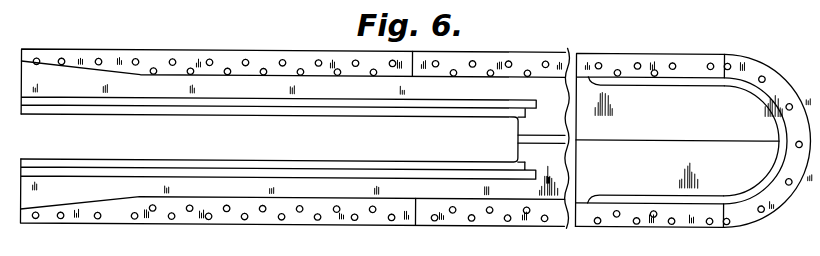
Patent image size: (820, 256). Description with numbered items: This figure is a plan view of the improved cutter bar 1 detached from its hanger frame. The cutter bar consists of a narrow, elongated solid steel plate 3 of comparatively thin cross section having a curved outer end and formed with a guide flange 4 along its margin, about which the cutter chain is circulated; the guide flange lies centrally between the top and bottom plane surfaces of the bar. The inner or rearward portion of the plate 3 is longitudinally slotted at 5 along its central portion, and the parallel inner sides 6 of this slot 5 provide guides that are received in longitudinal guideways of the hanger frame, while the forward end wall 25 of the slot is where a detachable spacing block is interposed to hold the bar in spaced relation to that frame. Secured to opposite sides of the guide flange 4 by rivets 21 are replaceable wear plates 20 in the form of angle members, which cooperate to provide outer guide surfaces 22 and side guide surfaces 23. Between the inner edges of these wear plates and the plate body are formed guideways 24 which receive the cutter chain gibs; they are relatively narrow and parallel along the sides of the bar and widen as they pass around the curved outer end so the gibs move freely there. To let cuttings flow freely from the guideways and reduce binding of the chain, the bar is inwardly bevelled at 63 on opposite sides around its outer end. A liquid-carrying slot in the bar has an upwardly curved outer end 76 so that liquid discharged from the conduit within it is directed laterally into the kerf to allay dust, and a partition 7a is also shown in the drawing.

The cutter bar 1 is at (338, 195).
The solid steel plate 3 is at (632, 102).
The guide flange 4 is at (764, 220).
The slot 5 is at (258, 110).
The inner sides of slot 6 is at (210, 113).
The partition 7a is at (670, 137).
The wear plates 20 is at (465, 58).
The rivets 21 is at (548, 220).
The outer guide surfaces 22 is at (707, 53).
The side guide surfaces 23 is at (646, 224).
The guideways 24 is at (251, 75).
The forward end wall of slot 25 is at (518, 137).
The bevelled portions 63 is at (742, 86).
The upwardly curved outer end of slot 76 is at (768, 146).